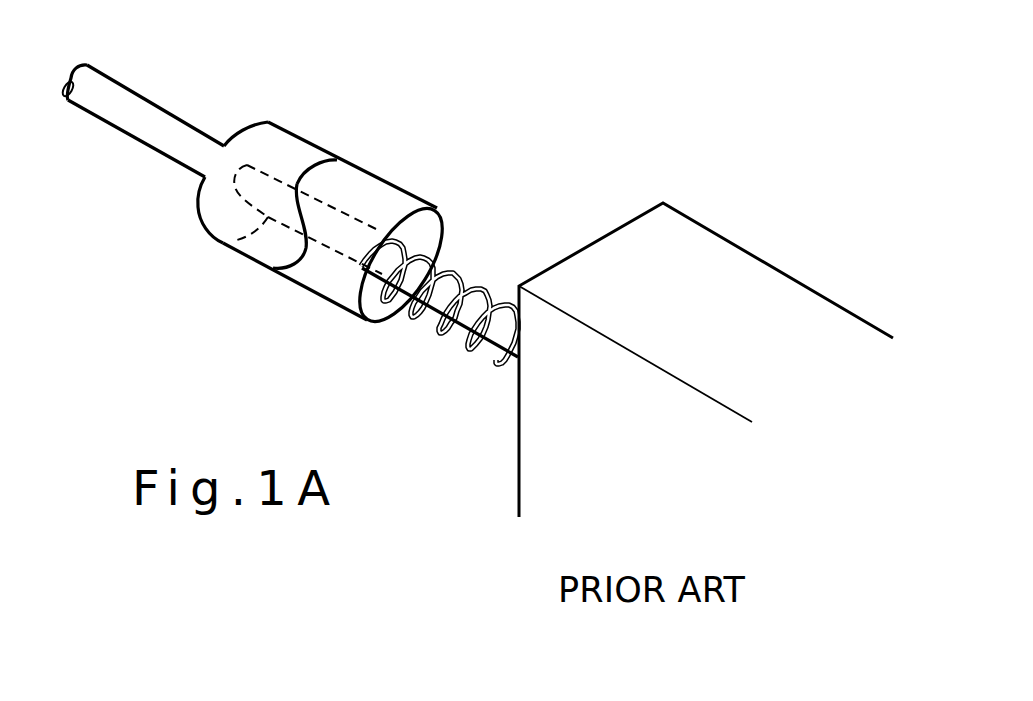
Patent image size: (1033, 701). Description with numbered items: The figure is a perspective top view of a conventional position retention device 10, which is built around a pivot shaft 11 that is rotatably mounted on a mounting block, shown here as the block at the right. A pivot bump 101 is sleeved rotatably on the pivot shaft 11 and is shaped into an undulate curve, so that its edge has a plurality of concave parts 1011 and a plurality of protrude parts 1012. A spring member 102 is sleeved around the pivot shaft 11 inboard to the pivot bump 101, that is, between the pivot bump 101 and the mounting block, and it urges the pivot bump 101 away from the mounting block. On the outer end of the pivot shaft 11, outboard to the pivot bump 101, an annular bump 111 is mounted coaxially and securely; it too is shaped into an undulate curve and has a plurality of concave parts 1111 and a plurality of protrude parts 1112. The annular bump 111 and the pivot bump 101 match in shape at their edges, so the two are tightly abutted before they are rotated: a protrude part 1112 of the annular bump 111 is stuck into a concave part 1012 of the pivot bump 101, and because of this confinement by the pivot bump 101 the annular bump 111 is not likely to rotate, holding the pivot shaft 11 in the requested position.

The retention device 10 is at (535, 214).
The pivot bump 101 is at (384, 197).
The concave parts 1011 is at (308, 253).
The protrude parts 1012 is at (315, 173).
The spring member 102 is at (486, 346).
The pivot shaft 11 is at (155, 63).
The annular bump 111 is at (251, 140).
The concave parts 1111 is at (295, 180).
The protrude parts 1112 is at (298, 247).